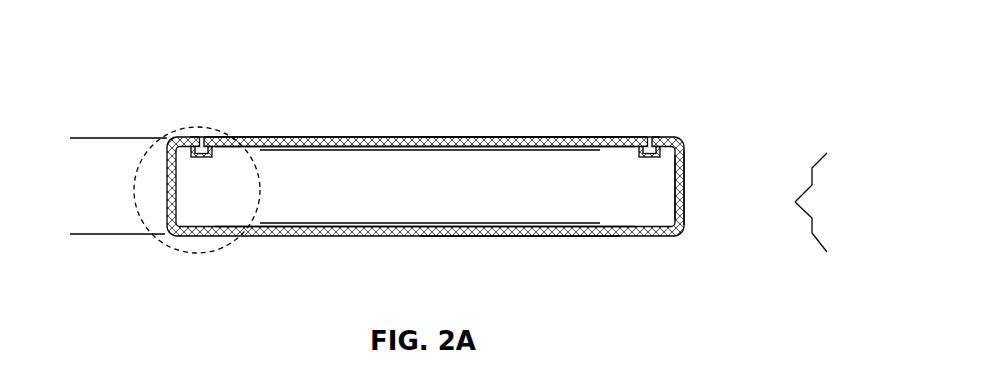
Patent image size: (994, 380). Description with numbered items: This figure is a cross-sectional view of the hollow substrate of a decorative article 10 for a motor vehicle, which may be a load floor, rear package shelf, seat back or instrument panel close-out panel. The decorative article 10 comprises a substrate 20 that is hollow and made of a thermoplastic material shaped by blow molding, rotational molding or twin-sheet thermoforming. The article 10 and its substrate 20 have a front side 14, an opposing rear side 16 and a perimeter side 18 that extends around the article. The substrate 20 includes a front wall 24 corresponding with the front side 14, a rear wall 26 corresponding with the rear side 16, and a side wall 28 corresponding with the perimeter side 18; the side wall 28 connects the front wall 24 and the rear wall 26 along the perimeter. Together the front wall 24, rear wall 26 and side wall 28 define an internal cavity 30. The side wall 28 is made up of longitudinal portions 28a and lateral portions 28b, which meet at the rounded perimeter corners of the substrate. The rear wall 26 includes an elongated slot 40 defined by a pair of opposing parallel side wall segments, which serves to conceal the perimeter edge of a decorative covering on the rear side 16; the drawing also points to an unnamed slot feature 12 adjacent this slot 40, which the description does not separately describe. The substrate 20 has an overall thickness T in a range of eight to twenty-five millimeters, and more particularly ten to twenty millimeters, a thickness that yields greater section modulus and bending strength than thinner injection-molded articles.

The decorative article 10 is at (158, 62).
The slot 12 is at (215, 128).
The front side 14 is at (602, 265).
The rear side 16 is at (622, 115).
The perimeter side 18 is at (708, 175).
The substrate 20 is at (307, 128).
The front wall 24 is at (522, 236).
The rear wall 26 is at (522, 137).
The side wall 28 is at (684, 202).
The longitudinal portions of the side wall 28a is at (828, 177).
The lateral portions of the side wall 28b is at (829, 227).
The internal cavity 30 is at (438, 196).
The elongated slot 40 is at (193, 125).
The overall thickness T is at (103, 139).